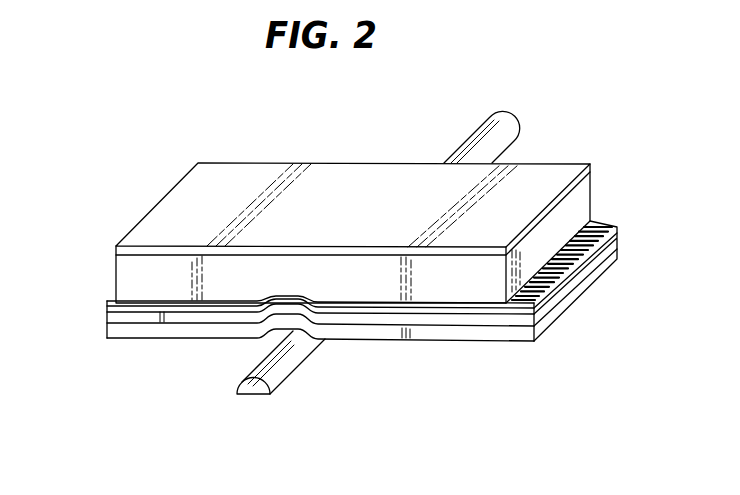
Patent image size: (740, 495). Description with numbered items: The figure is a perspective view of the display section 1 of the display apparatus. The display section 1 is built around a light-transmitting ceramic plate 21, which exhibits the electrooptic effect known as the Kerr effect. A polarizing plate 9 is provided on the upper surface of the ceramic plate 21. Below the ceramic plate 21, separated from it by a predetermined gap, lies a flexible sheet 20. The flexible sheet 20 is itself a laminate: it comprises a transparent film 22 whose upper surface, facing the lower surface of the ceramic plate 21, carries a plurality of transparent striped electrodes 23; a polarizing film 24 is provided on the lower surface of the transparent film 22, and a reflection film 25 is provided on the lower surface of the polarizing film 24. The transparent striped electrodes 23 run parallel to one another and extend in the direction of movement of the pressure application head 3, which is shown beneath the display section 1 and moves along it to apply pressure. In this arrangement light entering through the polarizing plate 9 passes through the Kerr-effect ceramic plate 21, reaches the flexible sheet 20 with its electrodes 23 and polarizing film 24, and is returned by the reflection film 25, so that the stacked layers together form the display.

The display section 1 is at (73, 344).
The polarizing plate 9 is at (310, 187).
The light-transmitting ceramic plate 21 is at (455, 280).
The flexible sheet 20 is at (622, 221).
The transparent striped electrodes 23 is at (582, 245).
The transparent film 22 is at (577, 275).
The polarizing film 24 is at (357, 330).
The reflection film 25 is at (182, 338).
The pressure application head 3 is at (285, 360).